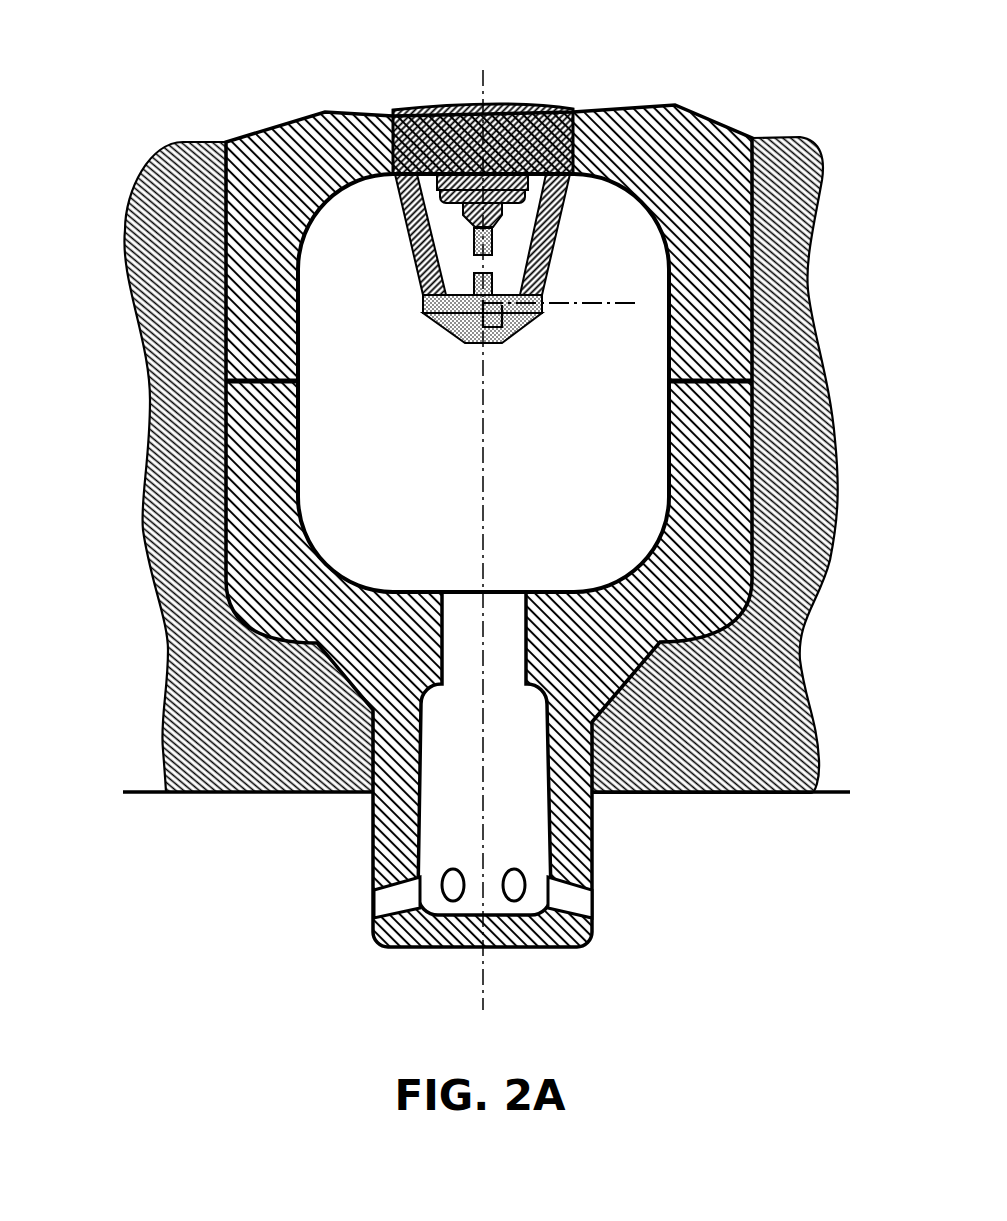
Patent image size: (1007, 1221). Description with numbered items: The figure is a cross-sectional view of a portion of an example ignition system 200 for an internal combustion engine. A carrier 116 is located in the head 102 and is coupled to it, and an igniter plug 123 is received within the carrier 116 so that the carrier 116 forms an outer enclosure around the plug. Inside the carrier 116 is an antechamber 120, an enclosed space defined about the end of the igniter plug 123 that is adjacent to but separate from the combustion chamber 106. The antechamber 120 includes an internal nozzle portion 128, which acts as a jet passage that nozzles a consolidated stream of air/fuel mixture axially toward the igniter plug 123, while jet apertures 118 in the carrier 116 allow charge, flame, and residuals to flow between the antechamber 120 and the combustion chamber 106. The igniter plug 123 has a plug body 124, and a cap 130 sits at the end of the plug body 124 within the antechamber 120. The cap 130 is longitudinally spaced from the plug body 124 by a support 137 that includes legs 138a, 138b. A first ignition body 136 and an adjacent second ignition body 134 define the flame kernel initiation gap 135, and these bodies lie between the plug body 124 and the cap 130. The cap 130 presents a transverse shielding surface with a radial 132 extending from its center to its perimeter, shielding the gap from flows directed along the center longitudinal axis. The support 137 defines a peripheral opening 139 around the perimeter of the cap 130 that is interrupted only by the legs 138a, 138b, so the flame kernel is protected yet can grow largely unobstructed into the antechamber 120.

The ignition system 200 is at (170, 50).
The head 102 is at (235, 705).
The combustion chamber 106 is at (296, 866).
The carrier 116 is at (258, 563).
The jet apertures 118 is at (374, 893).
The antechamber 120 is at (420, 554).
The igniter plug 123 is at (517, 72).
The plug body 124 is at (428, 148).
The internal nozzle portion 128 is at (500, 640).
The cap 130 is at (443, 323).
The radial 132 is at (513, 302).
The second ignition body 134 is at (475, 283).
The flame kernel initiation gap 135 is at (468, 265).
The first ignition body 136 is at (487, 242).
The support 137 is at (553, 284).
The leg 138a is at (405, 190).
The leg 138b is at (565, 198).
The peripheral opening 139 is at (452, 232).